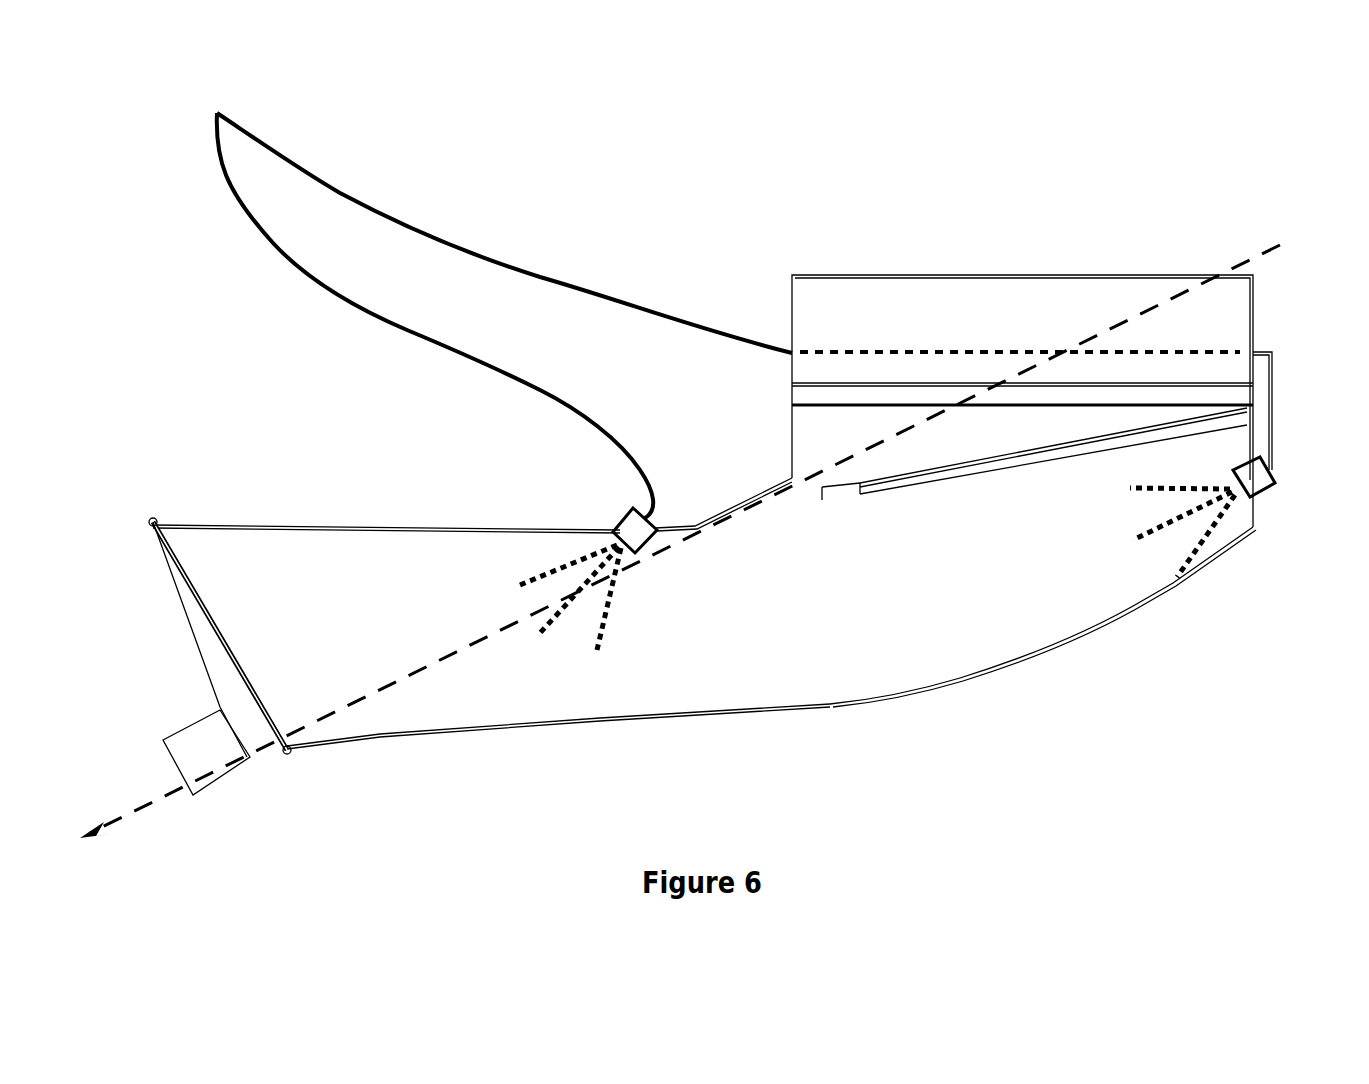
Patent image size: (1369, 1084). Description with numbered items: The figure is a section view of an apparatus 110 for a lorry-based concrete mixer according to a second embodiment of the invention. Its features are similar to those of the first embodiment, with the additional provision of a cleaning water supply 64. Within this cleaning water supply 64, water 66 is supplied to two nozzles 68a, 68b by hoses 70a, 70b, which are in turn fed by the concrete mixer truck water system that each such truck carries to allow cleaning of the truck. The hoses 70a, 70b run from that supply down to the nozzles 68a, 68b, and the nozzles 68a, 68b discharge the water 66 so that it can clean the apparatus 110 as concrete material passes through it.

The cleaning water supply 64 is at (504, 315).
The hose 70a is at (623, 293).
The hose 70b is at (477, 362).
The water 66 is at (1133, 540).
The nozzle 68a is at (1256, 492).
The nozzle 68b is at (617, 523).
The apparatus 110 is at (248, 435).